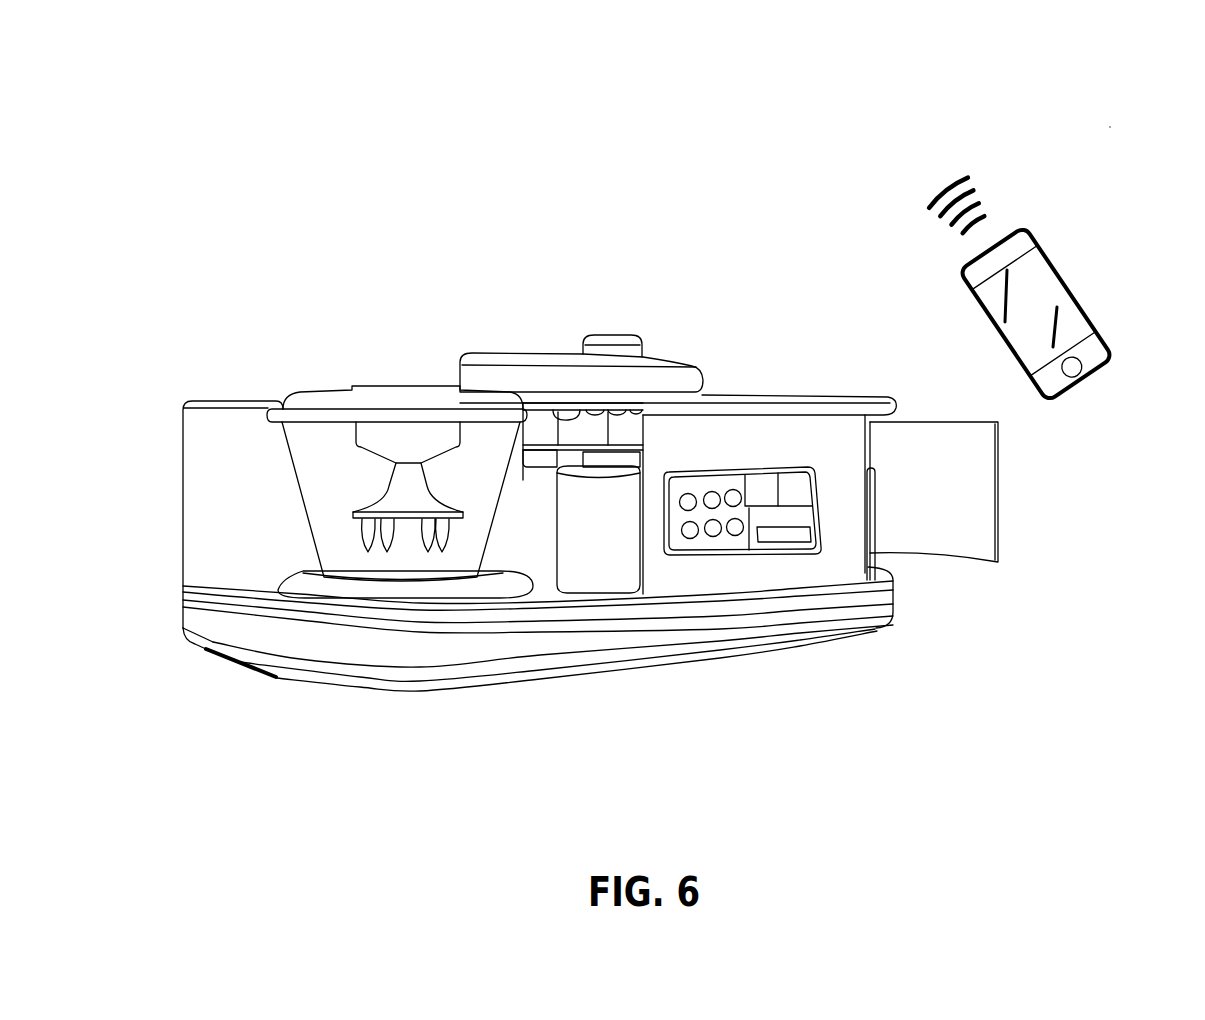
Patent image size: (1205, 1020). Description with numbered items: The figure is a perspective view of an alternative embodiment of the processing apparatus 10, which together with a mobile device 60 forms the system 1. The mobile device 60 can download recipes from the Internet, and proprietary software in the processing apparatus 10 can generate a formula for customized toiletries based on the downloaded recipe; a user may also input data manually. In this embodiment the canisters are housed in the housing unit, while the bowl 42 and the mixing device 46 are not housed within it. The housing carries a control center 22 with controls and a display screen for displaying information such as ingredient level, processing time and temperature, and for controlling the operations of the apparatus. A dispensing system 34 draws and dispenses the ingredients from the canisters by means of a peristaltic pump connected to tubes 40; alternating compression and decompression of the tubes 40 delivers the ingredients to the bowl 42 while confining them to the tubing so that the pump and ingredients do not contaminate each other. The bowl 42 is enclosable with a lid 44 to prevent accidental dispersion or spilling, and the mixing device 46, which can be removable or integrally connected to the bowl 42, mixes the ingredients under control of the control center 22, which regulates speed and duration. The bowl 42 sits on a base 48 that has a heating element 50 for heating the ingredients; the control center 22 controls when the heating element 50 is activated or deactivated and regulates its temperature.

The system 1 is at (1111, 128).
The processing apparatus 10 is at (178, 348).
The control center 22 is at (776, 552).
The dispensing system 34 is at (497, 354).
The tubes 40 is at (560, 400).
The bowl 42 is at (294, 504).
The lid 44 is at (309, 386).
The mixing device 46 is at (370, 507).
The base 48 is at (277, 680).
The heating element 50 is at (300, 583).
The mobile device 60 is at (1072, 289).